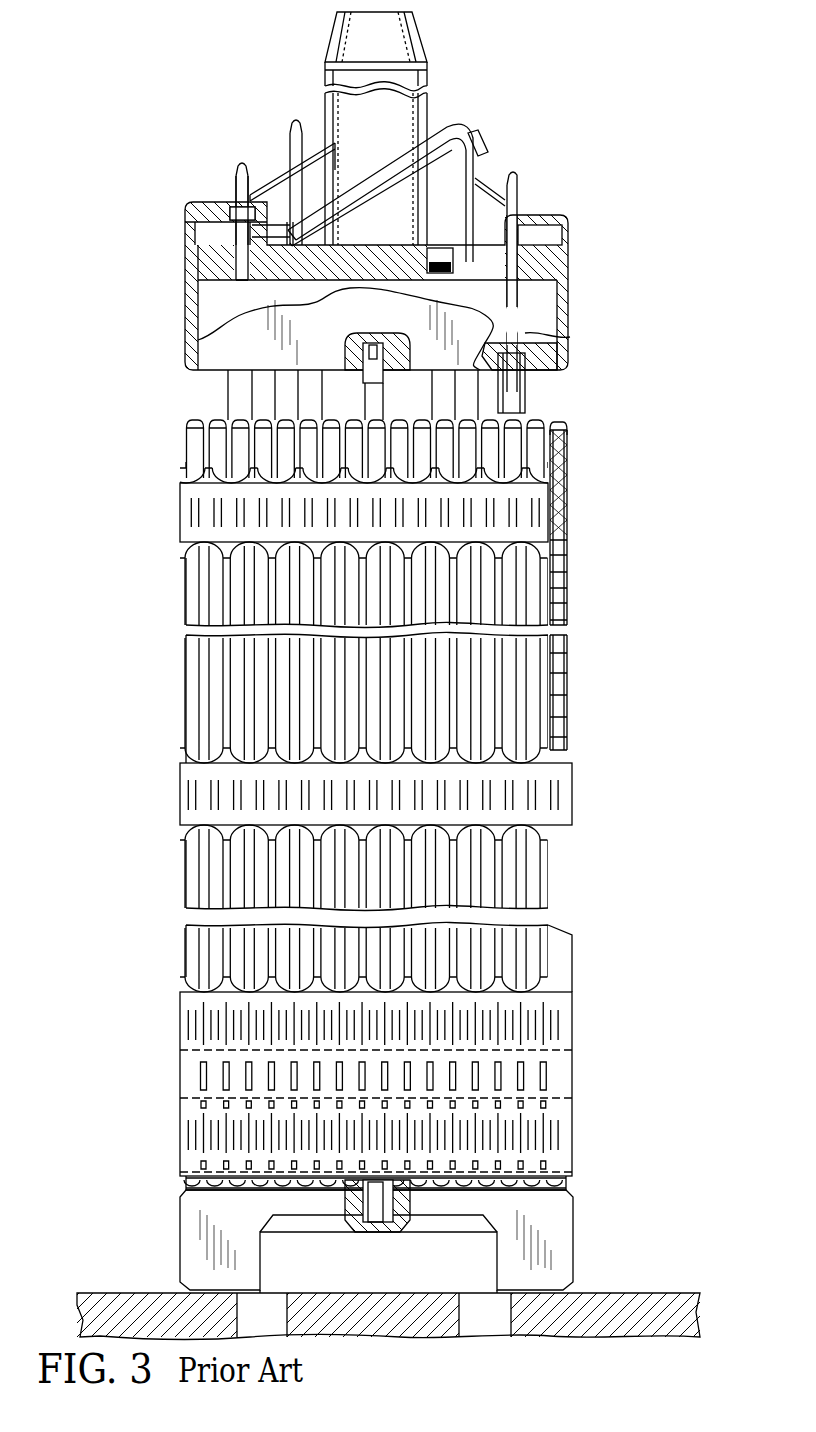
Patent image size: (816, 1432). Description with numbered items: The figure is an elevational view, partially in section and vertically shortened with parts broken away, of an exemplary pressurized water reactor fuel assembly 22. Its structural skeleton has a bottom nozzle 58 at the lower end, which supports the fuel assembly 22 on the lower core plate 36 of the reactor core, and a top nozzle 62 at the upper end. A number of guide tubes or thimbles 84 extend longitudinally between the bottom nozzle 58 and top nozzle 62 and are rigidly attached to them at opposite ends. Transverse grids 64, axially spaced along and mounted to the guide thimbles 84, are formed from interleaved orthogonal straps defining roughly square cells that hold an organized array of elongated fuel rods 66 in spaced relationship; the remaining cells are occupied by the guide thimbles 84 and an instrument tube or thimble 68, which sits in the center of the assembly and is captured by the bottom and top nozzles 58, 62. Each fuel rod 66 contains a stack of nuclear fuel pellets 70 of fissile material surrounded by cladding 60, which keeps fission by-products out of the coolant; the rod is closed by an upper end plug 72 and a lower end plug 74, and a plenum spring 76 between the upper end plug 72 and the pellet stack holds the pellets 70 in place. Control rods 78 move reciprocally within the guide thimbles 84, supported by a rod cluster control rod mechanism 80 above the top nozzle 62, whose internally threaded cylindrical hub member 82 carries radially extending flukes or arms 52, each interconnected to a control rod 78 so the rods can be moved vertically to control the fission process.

The fuel assembly 22 is at (660, 278).
The lower core plate 36 is at (622, 1293).
The flukes or arms 52 is at (488, 184).
The bottom nozzle 58 is at (580, 1232).
The cladding 60 is at (570, 860).
The top nozzle 62 is at (573, 262).
The transverse grids 64 is at (184, 807).
The fuel rods 66 is at (573, 696).
The instrument tube or thimble 68 is at (382, 1230).
The nuclear fuel pellets 70 is at (558, 597).
The upper end plug 72 is at (570, 432).
The lower end plug 74 is at (477, 1190).
The plenum spring 76 is at (568, 498).
The control rods 78 is at (570, 337).
The rod cluster control rod mechanism 80 is at (482, 118).
The internally threaded cylindrical hub member 82 is at (428, 108).
The guide tubes or thimbles 84 is at (213, 1185).